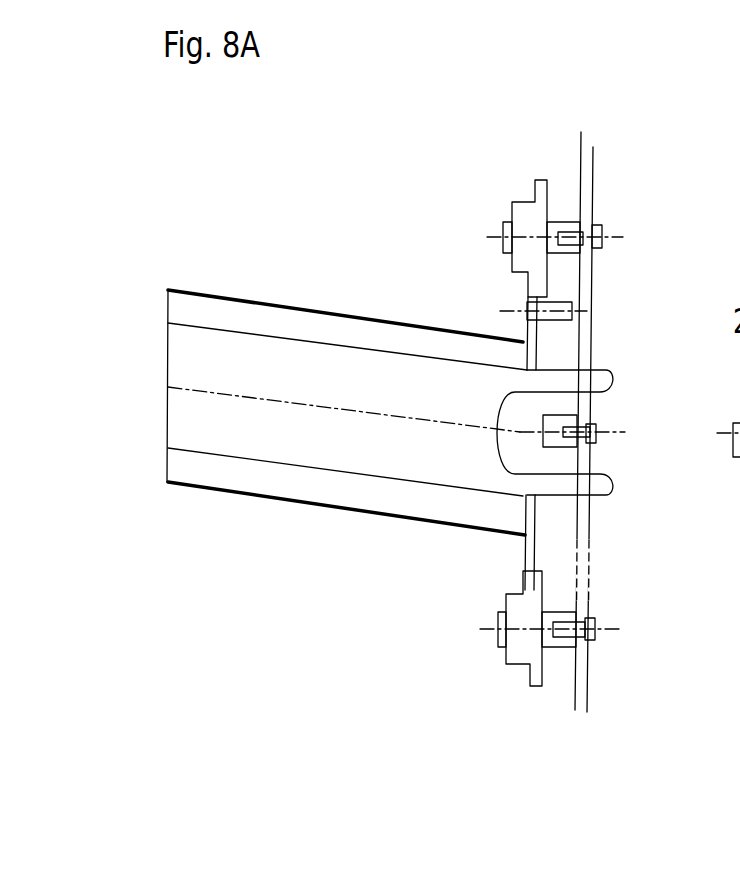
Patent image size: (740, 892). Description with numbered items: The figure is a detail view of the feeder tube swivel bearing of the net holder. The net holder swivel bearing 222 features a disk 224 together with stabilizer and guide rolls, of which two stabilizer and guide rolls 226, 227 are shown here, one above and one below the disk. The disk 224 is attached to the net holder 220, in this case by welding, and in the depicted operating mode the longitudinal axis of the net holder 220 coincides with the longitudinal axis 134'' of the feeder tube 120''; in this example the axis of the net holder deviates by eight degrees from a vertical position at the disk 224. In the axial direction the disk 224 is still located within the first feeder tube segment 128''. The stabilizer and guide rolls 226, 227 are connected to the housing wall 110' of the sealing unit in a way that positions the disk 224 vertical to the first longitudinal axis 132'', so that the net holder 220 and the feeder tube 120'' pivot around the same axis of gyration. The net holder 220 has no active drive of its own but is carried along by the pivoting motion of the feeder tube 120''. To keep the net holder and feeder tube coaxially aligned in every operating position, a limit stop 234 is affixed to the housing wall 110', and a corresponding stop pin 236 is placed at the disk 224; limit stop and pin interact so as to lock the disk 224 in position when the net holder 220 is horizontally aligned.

The housing wall 110' is at (647, 412).
The feeder tube 120'' is at (346, 550).
The first feeder tube segment 128'' is at (164, 514).
The first longitudinal axis 132'' is at (653, 401).
The longitudinal axis of the feeder tube 134'' is at (345, 496).
The net holder 220 is at (233, 292).
The net holder swivel bearing 222 is at (455, 204).
The disk 224 is at (527, 322).
The stabilizer and guide roll 226 is at (522, 198).
The stabilizer and guide roll 227 is at (513, 667).
The limit stop 234 is at (737, 449).
The stop pin 236 is at (570, 302).